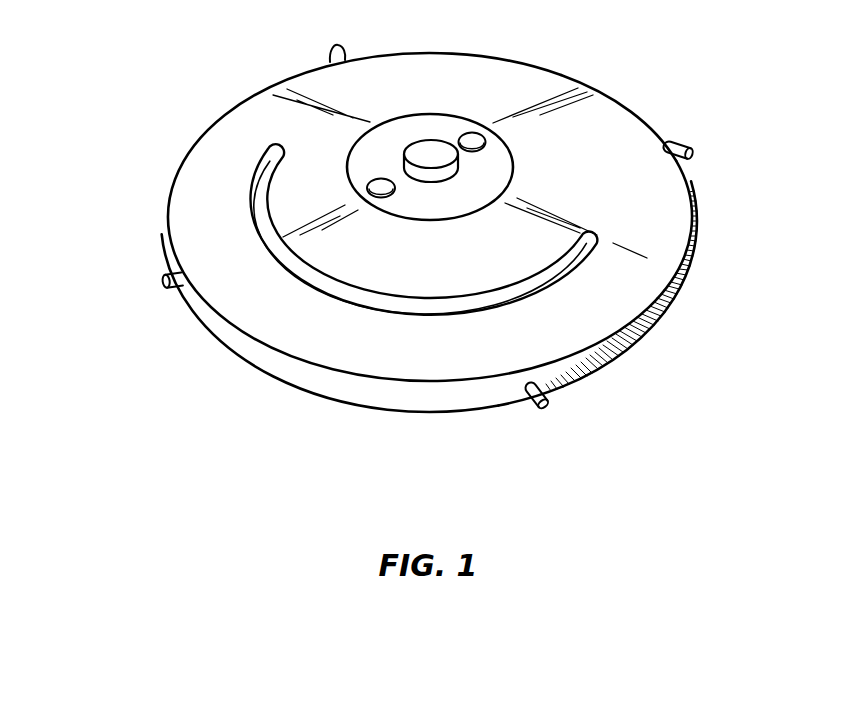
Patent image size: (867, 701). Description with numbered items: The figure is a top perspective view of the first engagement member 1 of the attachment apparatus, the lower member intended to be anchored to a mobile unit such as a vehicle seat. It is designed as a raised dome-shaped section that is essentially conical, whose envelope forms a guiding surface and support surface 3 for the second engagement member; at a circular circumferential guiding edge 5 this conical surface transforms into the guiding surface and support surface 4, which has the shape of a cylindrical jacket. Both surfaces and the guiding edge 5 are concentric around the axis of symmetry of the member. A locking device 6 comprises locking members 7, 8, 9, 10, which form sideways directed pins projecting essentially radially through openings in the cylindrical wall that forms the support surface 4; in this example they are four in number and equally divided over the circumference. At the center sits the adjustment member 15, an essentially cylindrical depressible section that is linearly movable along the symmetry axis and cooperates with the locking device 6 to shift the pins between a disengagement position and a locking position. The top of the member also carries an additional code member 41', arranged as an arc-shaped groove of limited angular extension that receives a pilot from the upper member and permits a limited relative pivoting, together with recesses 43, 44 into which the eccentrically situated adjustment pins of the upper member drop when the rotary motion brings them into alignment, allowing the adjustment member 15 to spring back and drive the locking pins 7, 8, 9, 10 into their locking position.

The first engagement member 1 is at (412, 245).
The guiding surface and support surface 3 is at (635, 135).
The guiding surface and support surface 4 is at (455, 393).
The guiding edge 5 is at (607, 93).
The locking device 6 is at (518, 416).
The locking member 7 is at (552, 407).
The locking member 8 is at (693, 150).
The locking member 9 is at (333, 56).
The locking member 10 is at (152, 284).
The adjustment member 15 is at (428, 123).
The additional code member 41' is at (446, 229).
The recess 43 is at (370, 185).
The recess 44 is at (483, 148).